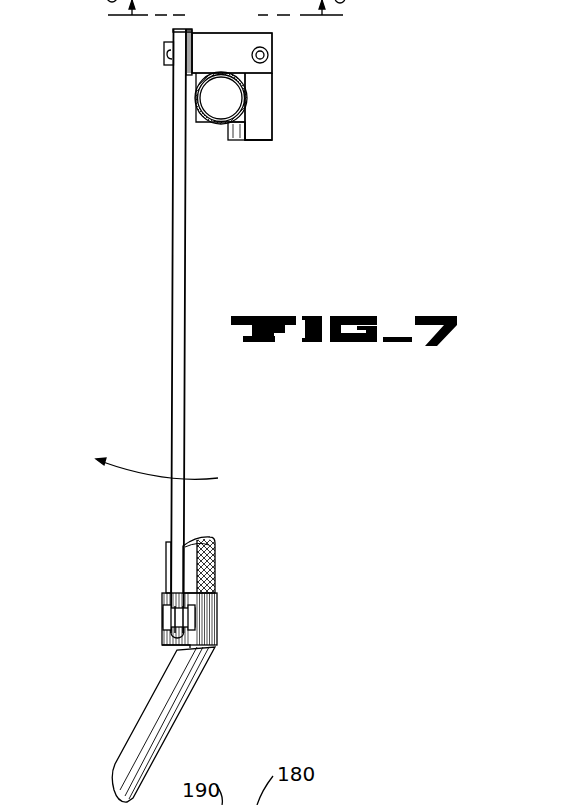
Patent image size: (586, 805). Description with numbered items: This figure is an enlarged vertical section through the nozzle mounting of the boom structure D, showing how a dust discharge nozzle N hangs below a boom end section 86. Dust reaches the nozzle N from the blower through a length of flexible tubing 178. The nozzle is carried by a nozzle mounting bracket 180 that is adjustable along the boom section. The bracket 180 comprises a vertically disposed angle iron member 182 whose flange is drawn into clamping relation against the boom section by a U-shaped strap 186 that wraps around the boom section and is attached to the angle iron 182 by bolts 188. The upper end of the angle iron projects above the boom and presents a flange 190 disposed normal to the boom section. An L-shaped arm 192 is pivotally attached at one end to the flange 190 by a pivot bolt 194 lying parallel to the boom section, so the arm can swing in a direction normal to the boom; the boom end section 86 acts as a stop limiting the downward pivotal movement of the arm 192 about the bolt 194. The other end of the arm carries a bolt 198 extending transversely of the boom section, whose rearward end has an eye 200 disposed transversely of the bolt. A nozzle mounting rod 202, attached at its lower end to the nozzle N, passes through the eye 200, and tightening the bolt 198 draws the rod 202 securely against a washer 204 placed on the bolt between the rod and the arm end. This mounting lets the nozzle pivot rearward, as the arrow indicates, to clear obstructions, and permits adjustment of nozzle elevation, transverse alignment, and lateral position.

The boom end section 86 is at (182, 98).
The flexible tubing 178 is at (203, 572).
The nozzle mounting bracket 180 is at (285, 152).
The angle iron member 182 is at (267, 121).
The U-shaped strap 186 is at (197, 113).
The bolts 188 is at (230, 133).
The flange 190 is at (262, 97).
The L-shaped arm 192 is at (243, 64).
The pivot bolt 194 is at (268, 58).
The bolt 198 is at (165, 50).
The eye 200 is at (157, 67).
The nozzle mounting rod 202 is at (172, 330).
The washer 204 is at (187, 33).
The boom structure D is at (252, 117).
The dust discharge nozzle N is at (122, 737).